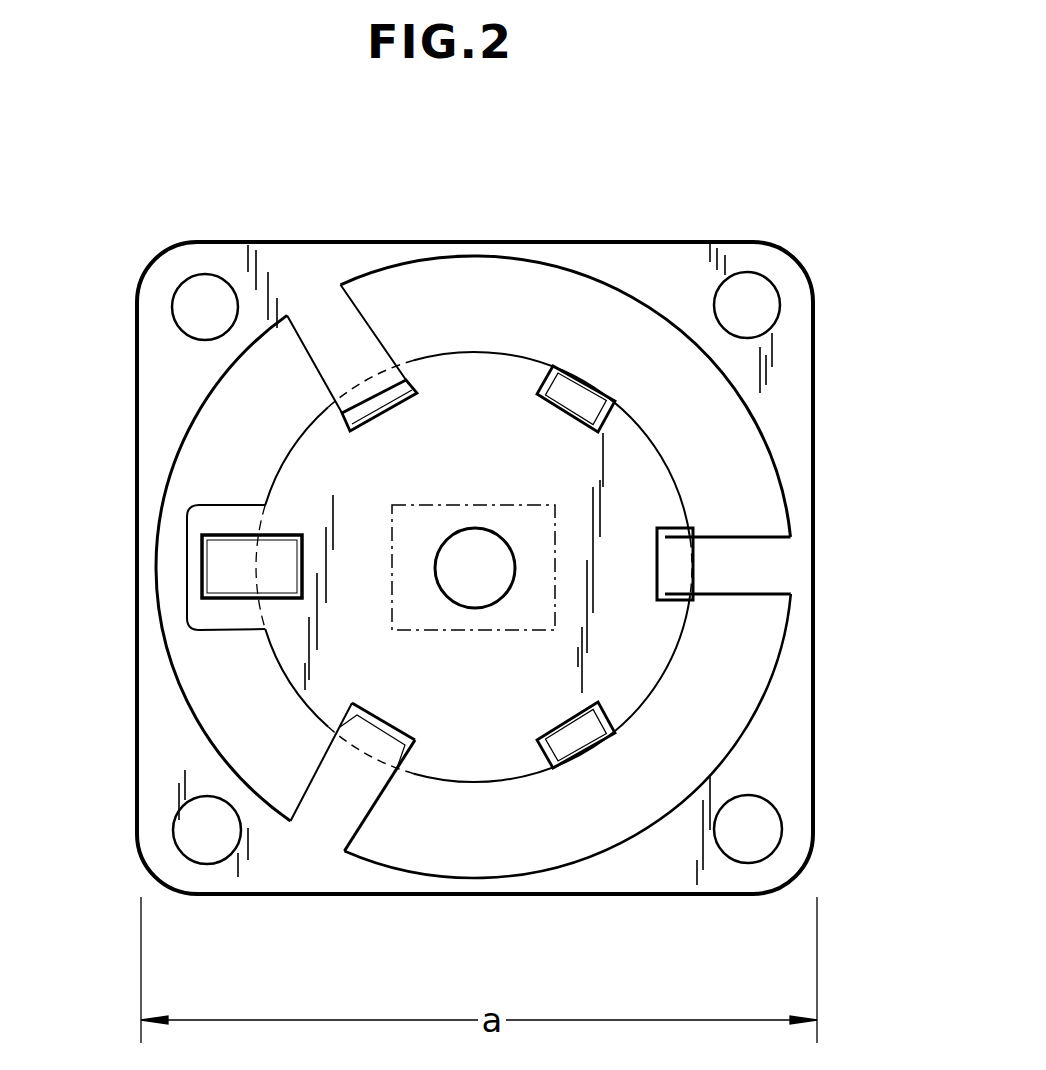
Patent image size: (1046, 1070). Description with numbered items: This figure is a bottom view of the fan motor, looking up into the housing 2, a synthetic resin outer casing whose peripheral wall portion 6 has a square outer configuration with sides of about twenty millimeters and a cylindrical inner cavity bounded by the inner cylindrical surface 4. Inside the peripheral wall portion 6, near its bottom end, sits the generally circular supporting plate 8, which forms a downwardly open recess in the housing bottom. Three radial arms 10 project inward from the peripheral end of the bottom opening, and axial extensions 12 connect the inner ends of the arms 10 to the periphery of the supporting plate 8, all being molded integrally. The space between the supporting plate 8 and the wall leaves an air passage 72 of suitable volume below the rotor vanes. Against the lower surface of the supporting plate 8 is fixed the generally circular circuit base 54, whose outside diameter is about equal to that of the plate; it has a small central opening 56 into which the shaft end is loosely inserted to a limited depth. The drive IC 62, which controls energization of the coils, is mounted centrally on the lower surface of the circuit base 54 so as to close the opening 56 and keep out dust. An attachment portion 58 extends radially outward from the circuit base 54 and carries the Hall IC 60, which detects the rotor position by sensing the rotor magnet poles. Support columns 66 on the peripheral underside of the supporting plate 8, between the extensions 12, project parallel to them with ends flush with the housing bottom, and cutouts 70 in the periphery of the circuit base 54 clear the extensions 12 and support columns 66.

The housing 2 is at (501, 553).
The inner cylindrical surface 4 is at (668, 314).
The peripheral wall portion 6 is at (795, 703).
The supporting plate 8 is at (745, 523).
The radial arms 10 is at (345, 340).
The axial extensions 12 is at (340, 417).
The circuit base 54 is at (623, 445).
The opening 56 is at (470, 538).
The attachment portion 58 is at (200, 615).
The Hall IC 60 is at (220, 563).
The drive IC 62 is at (492, 632).
The support columns 66 is at (542, 368).
The cutouts 70 is at (412, 383).
The air passage 72 is at (742, 455).